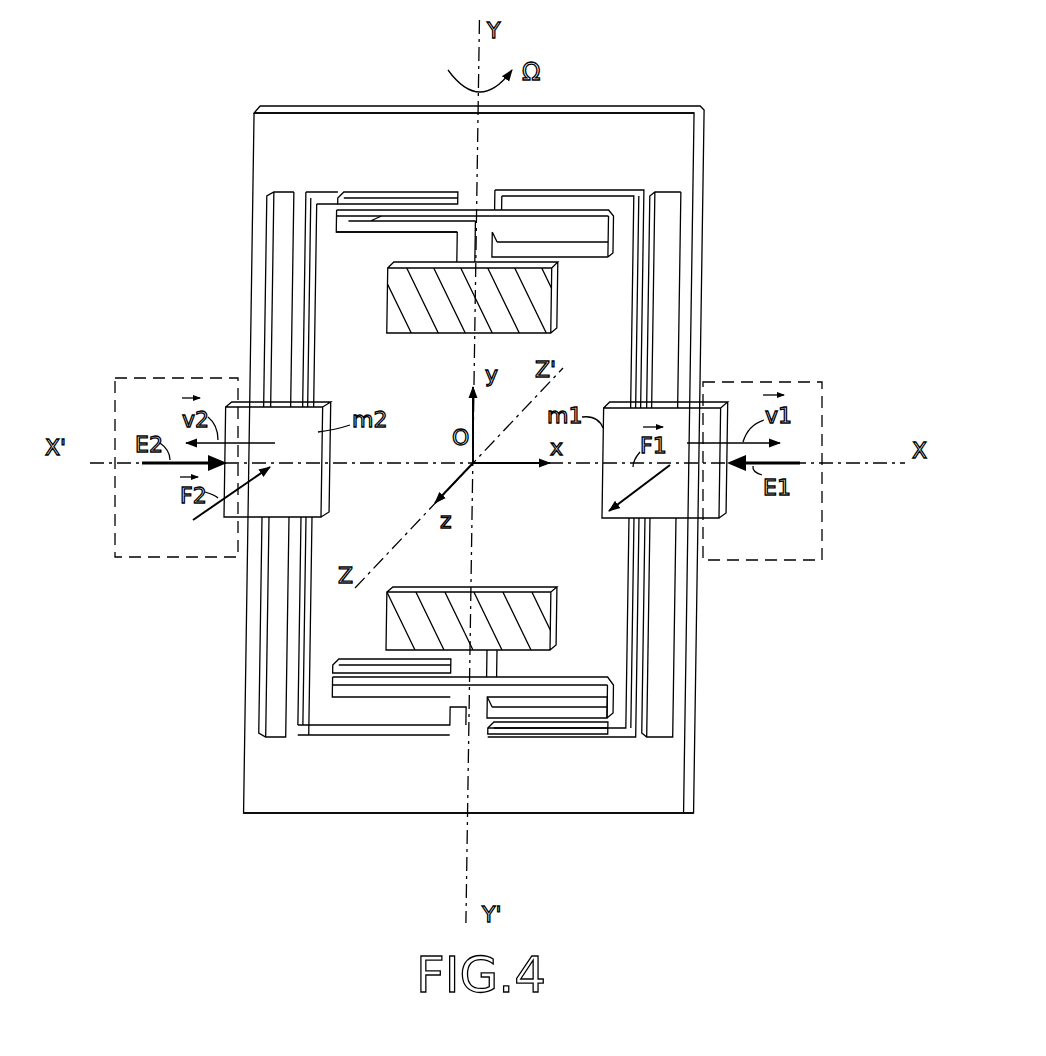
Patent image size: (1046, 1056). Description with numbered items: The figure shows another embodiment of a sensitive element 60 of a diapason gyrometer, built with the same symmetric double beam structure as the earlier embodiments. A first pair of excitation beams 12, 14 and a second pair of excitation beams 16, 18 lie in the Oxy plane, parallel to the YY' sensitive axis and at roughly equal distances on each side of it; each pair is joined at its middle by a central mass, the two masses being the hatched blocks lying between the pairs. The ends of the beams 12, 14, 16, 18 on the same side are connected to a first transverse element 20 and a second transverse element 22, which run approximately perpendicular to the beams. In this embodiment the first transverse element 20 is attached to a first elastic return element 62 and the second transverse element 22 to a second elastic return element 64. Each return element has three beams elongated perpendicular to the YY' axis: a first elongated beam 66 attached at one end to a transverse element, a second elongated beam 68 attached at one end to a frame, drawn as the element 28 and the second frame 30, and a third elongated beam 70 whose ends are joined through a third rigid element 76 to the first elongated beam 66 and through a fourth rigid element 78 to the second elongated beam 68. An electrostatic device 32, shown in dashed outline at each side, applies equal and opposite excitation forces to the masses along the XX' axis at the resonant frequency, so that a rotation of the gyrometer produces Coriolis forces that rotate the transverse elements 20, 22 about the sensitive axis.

The excitation beam 12 is at (630, 383).
The excitation beam 14 is at (690, 345).
The excitation beam 16 is at (303, 290).
The excitation beam 18 is at (262, 285).
The first transverse element 20 is at (340, 126).
The second transverse element 22 is at (352, 805).
The upper seismic mass 28 is at (432, 335).
The second frame 30 is at (533, 587).
The electrostatic device 32 is at (170, 378).
The sensitive element 60 is at (668, 73).
The first elastic return element 62 is at (577, 272).
The second elastic return element 64 is at (585, 667).
The first elongated beam 66 is at (415, 208).
The second elongated beam 68 is at (590, 250).
The third elongated beam 70 is at (378, 223).
The third rigid element 76 is at (353, 216).
The fourth rigid element 78 is at (594, 244).